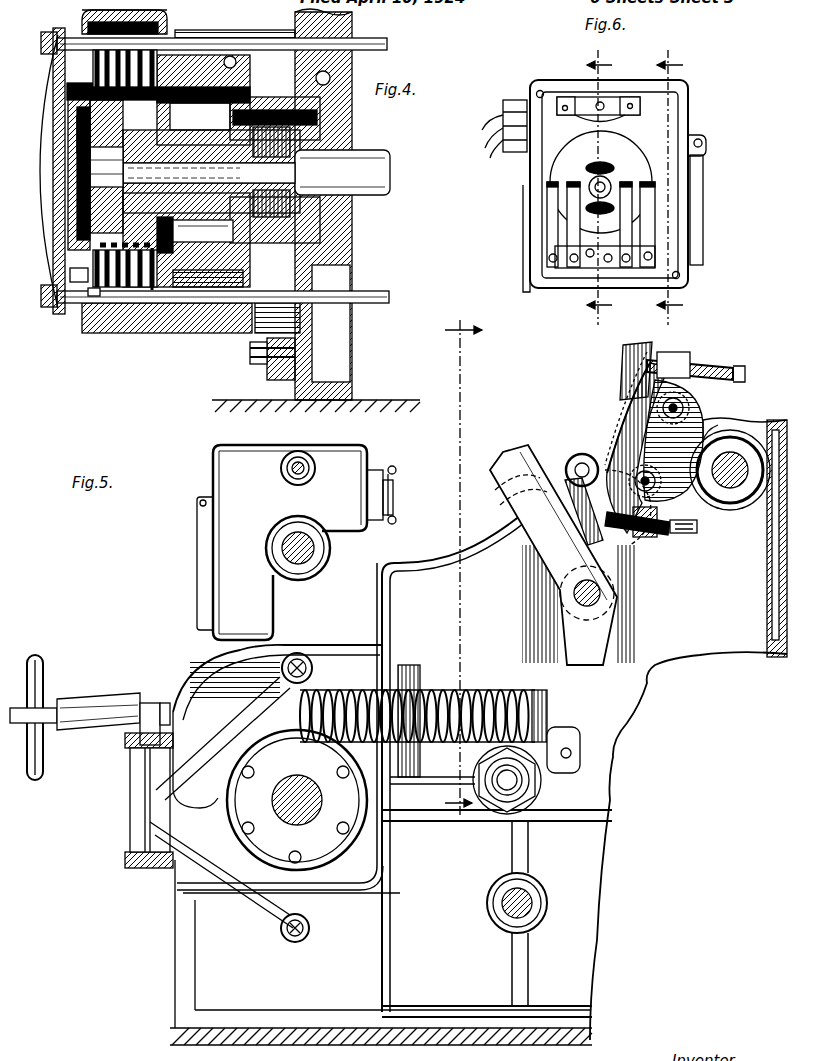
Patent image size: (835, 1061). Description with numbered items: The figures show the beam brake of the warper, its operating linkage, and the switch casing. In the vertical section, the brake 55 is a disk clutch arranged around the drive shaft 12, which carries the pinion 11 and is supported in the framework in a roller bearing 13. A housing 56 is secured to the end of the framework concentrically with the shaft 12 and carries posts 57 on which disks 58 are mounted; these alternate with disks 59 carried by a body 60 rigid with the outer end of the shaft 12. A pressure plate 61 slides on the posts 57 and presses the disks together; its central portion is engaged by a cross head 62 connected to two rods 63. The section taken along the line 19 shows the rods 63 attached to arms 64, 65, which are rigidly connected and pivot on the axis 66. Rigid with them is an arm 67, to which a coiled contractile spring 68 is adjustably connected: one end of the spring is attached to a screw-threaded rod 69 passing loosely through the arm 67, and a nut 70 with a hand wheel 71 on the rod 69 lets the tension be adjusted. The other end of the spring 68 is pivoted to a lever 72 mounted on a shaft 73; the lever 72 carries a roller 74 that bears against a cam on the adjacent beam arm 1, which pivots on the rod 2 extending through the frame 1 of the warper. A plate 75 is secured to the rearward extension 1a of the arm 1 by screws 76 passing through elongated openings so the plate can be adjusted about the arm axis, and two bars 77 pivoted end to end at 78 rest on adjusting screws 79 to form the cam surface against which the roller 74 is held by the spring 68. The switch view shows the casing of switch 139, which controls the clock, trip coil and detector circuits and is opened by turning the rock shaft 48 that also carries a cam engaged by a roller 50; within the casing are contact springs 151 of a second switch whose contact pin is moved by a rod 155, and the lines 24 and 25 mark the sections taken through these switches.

In FIG. 5, the arm 1 is at (765, 523).
In FIG. 5, the rearward extension 1a is at (612, 412).
In FIG. 5, the shaft or rod 2 is at (738, 460).
In FIG. 4, the pinion 11 is at (196, 230).
In FIG. 4, the drive shaft 12 is at (370, 168).
In FIG. 5, the drive shaft 12 is at (283, 812).
In FIG. 4, the roller bearing 13 is at (272, 120).
In FIG. 5, the section line 19 is at (456, 573).
In FIG. 6, the section line 24 is at (604, 186).
In FIG. 6, the section line 25 is at (674, 186).
In FIG. 5, the rock shaft 48 is at (285, 542).
In FIG. 4, the roller 50 is at (94, 292).
In FIG. 4, the brake 55 is at (118, 4).
In FIG. 4, the housing 56 is at (167, 21).
In FIG. 4, the post 57 is at (72, 276).
In FIG. 4, the disk 58 is at (143, 312).
In FIG. 4, the disk 59 is at (148, 292).
In FIG. 4, the body 60 is at (95, 237).
In FIG. 4, the pressure plate 61 is at (70, 107).
In FIG. 4, the cross head 62 is at (58, 143).
In FIG. 4, the rod 63 is at (378, 42).
In FIG. 5, the rod 63 is at (305, 655).
In FIG. 5, the arm 64 is at (225, 720).
In FIG. 5, the arm 65 is at (262, 915).
In FIG. 5, the axis 66 is at (128, 804).
In FIG. 5, the arm 67 is at (148, 703).
In FIG. 5, the coiled contractile spring 68 is at (415, 690).
In FIG. 5, the screw-threaded rod 69 is at (177, 705).
In FIG. 5, the nut 70 is at (85, 700).
In FIG. 5, the hand wheel 71 is at (40, 672).
In FIG. 5, the lever 72 is at (525, 452).
In FIG. 5, the shaft 73 is at (598, 594).
In FIG. 5, the roller 74 is at (580, 453).
In FIG. 5, the plate 75 is at (617, 400).
In FIG. 5, the screw 76 is at (683, 402).
In FIG. 5, the bar 77 is at (625, 352).
In FIG. 5, the pivot 78 is at (625, 450).
In FIG. 5, the adjusting screw 79 is at (690, 365).
In FIG. 6, the switch 139 is at (604, 186).
In FIG. 5, the switch 139 is at (222, 457).
In FIG. 6, the contact spring 151 is at (600, 103).
In FIG. 5, the rod 155 is at (306, 458).